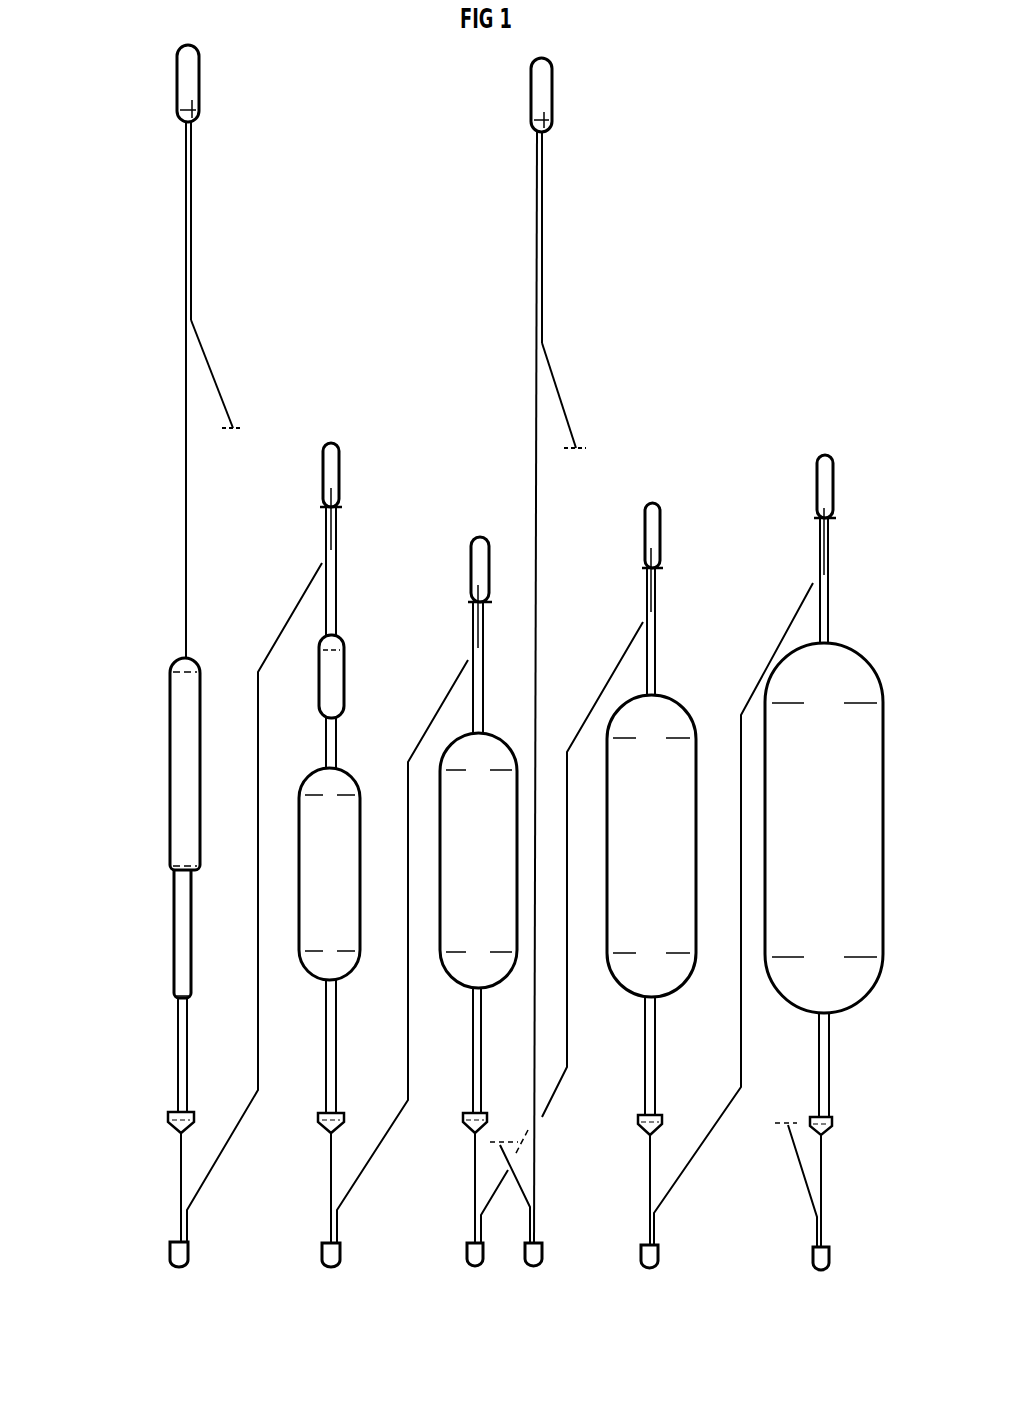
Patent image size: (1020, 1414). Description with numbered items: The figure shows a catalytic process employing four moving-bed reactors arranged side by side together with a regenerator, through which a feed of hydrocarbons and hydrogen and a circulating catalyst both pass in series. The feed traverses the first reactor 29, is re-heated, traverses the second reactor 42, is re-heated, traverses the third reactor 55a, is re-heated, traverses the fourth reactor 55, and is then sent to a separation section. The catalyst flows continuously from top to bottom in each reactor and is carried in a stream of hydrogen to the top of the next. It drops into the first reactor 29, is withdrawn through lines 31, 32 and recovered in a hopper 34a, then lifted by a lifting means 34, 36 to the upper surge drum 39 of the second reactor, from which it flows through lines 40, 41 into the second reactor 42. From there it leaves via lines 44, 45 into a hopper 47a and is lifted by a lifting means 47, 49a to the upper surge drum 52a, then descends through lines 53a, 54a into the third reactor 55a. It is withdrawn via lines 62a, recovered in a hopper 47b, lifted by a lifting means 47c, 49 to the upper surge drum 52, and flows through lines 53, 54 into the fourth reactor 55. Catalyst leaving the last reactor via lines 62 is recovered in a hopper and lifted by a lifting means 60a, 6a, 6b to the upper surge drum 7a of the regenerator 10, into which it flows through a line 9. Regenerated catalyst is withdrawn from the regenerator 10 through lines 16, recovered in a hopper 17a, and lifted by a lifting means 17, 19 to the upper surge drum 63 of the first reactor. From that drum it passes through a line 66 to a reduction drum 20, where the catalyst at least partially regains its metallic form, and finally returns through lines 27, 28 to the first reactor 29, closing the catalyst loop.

The upper surge drum 7a is at (200, 64).
The line 9 is at (186, 370).
The lifting means 6b is at (210, 375).
The lifting means 6a is at (555, 382).
The regenerator 10 is at (170, 700).
The lines 16 is at (178, 1042).
The hopper 17a is at (168, 1112).
The lifting means 17 is at (170, 1250).
The lifting means 19 is at (294, 592).
The upper surge drum 63 is at (334, 459).
The line 66 is at (324, 526).
The reduction drum 20 is at (344, 664).
The line 27 is at (326, 738).
The line 28 is at (336, 738).
The reactor 29 is at (329, 874).
The line 31 is at (326, 1040).
The line 32 is at (336, 1040).
The hopper 34a is at (318, 1110).
The lifting means 34 is at (320, 1248).
The lifting means 36 is at (456, 680).
The upper surge drum 39 is at (472, 536).
The line 41 is at (472, 622).
The line 40 is at (483, 615).
The reactor 42 is at (478, 860).
The line 44 is at (473, 1040).
The line 45 is at (481, 1040).
The hopper 47a is at (466, 1118).
The lifting means 47 is at (466, 1252).
The upper surge drum 52a is at (660, 515).
The line 53a is at (646, 592).
The line 54a is at (655, 590).
The reactor 55a is at (651, 846).
The lines 62a is at (645, 1032).
The hopper 47b is at (638, 1118).
The lifting means 47c is at (642, 1246).
The lifting means 49a is at (630, 644).
The upper surge drum 52 is at (834, 480).
The line 54 is at (820, 544).
The line 53 is at (828, 536).
The reactor 55 is at (824, 828).
The lines 62 is at (819, 1044).
The lifting means 60a is at (812, 1250).
The lifting means 49 is at (758, 656).